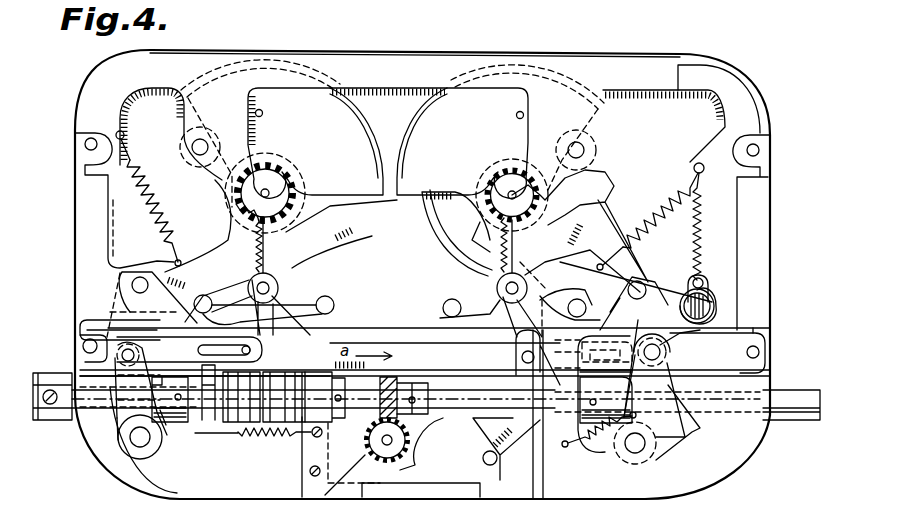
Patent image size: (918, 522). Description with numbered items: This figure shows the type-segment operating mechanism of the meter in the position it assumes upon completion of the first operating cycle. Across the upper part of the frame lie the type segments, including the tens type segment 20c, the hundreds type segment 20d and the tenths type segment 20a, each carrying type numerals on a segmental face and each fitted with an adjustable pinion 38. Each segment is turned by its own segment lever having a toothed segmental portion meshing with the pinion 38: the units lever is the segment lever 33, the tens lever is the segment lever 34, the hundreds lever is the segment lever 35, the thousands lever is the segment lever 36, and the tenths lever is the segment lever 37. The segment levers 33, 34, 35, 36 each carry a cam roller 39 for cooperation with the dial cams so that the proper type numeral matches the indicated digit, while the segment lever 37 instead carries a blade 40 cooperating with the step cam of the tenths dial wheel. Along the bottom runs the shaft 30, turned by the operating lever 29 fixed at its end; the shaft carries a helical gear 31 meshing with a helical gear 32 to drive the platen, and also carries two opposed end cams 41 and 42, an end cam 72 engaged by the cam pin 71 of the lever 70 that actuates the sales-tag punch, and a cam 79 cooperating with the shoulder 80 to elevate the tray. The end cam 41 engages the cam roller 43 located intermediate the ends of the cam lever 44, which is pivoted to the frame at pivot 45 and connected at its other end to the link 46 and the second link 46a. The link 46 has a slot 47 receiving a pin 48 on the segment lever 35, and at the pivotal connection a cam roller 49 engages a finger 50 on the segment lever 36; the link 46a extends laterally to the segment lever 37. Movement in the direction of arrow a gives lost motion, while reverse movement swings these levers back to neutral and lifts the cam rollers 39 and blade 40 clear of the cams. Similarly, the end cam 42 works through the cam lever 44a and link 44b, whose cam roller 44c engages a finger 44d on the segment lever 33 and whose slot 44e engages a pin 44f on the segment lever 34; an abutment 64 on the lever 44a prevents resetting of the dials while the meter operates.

The hundreds type segment 20d is at (320, 122).
The tens type segment 20c is at (483, 117).
The tenths type segment 20a is at (458, 241).
The pinion 38 is at (288, 182).
The segment lever 35 is at (290, 259).
The segment lever 34 is at (511, 259).
The segment lever 36 is at (185, 251).
The segment lever 33 is at (551, 256).
The segment lever 37 is at (588, 217).
The blade 40 is at (706, 284).
The cam roller 39 is at (208, 302).
The link 44b is at (637, 330).
The finger 50 is at (80, 330).
The link 46 is at (182, 360).
The slot 47 is at (218, 350).
The pin 48 is at (251, 350).
The cam roller 49 is at (121, 362).
The cam roller 43 is at (132, 410).
The cam lever 44 is at (127, 393).
The pivot 45 is at (138, 442).
The shaft 30 is at (455, 396).
The operating lever 29 is at (50, 415).
The end cam 41 is at (174, 428).
The cam pin 71 is at (215, 430).
The lever 70 is at (240, 440).
The end cam 72 is at (280, 425).
The cam 79 is at (325, 397).
The helical gear 31 is at (398, 376).
The shoulder 80 is at (205, 362).
The helical gear 32 is at (415, 452).
The link 46a is at (470, 345).
The pin 44f is at (516, 356).
The slot 44e is at (588, 381).
The cam roller 44c is at (672, 360).
The cam lever 44a is at (655, 378).
The finger 44d is at (680, 333).
The abutment 64 is at (698, 425).
The end cam 42 is at (610, 417).